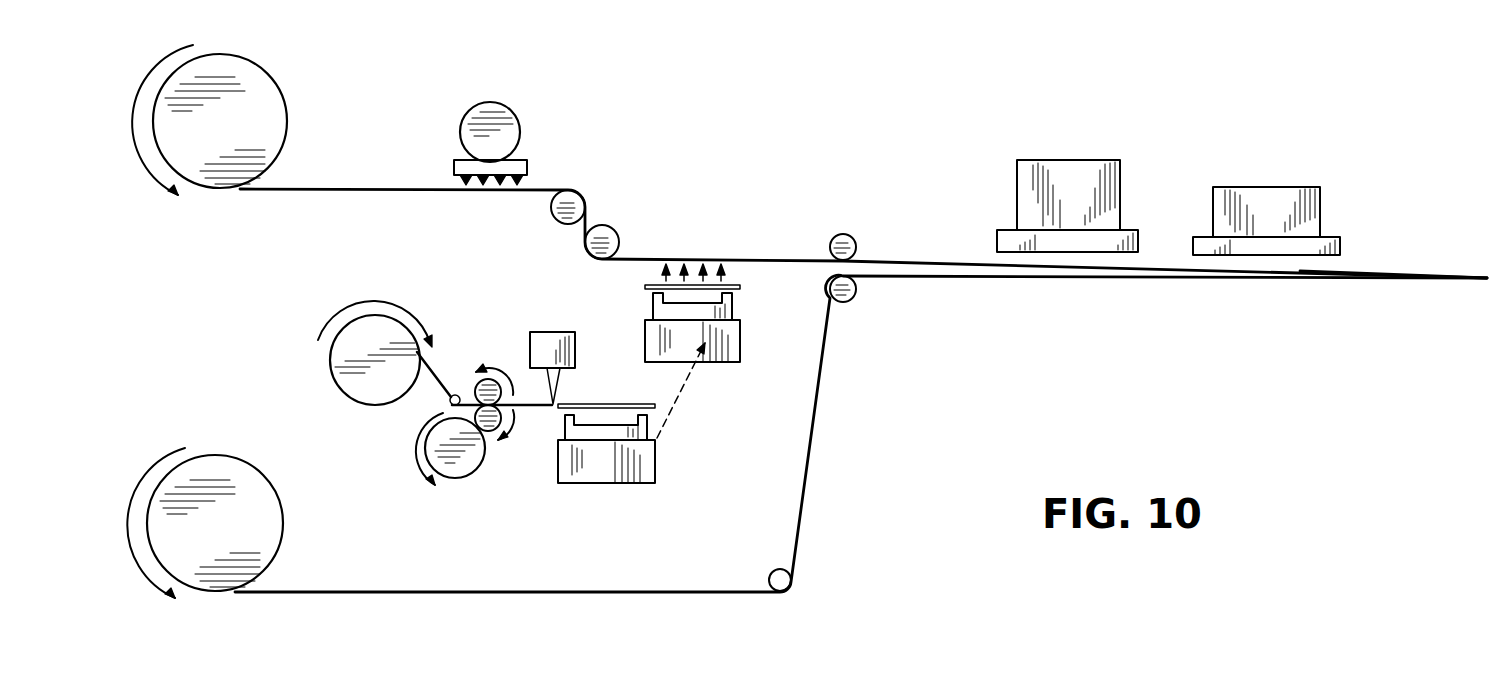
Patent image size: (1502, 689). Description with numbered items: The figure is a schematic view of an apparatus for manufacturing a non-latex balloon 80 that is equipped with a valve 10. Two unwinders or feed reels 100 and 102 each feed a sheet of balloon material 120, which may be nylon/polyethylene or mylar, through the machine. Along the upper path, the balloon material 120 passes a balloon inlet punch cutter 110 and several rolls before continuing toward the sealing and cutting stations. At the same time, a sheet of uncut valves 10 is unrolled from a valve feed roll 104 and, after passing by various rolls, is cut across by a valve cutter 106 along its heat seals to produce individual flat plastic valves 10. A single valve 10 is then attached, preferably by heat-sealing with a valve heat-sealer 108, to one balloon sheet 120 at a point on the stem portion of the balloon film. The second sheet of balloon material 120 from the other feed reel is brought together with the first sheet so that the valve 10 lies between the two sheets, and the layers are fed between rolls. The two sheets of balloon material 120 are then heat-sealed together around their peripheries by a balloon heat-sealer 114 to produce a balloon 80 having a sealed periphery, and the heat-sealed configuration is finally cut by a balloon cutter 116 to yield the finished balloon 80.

The valve 10 is at (743, 294).
The non-latex balloon 80 is at (1412, 285).
The feed reel 100 is at (255, 97).
The feed reel 102 is at (257, 537).
The valve feed roll 104 is at (343, 362).
The valve cutter 106 is at (545, 337).
The valve heat-sealer 108 is at (647, 335).
The balloon inlet punch cutter 110 is at (512, 138).
The balloon heat-sealer 114 is at (1073, 167).
The balloon cutter 116 is at (1273, 192).
The balloon material 120 is at (330, 188).